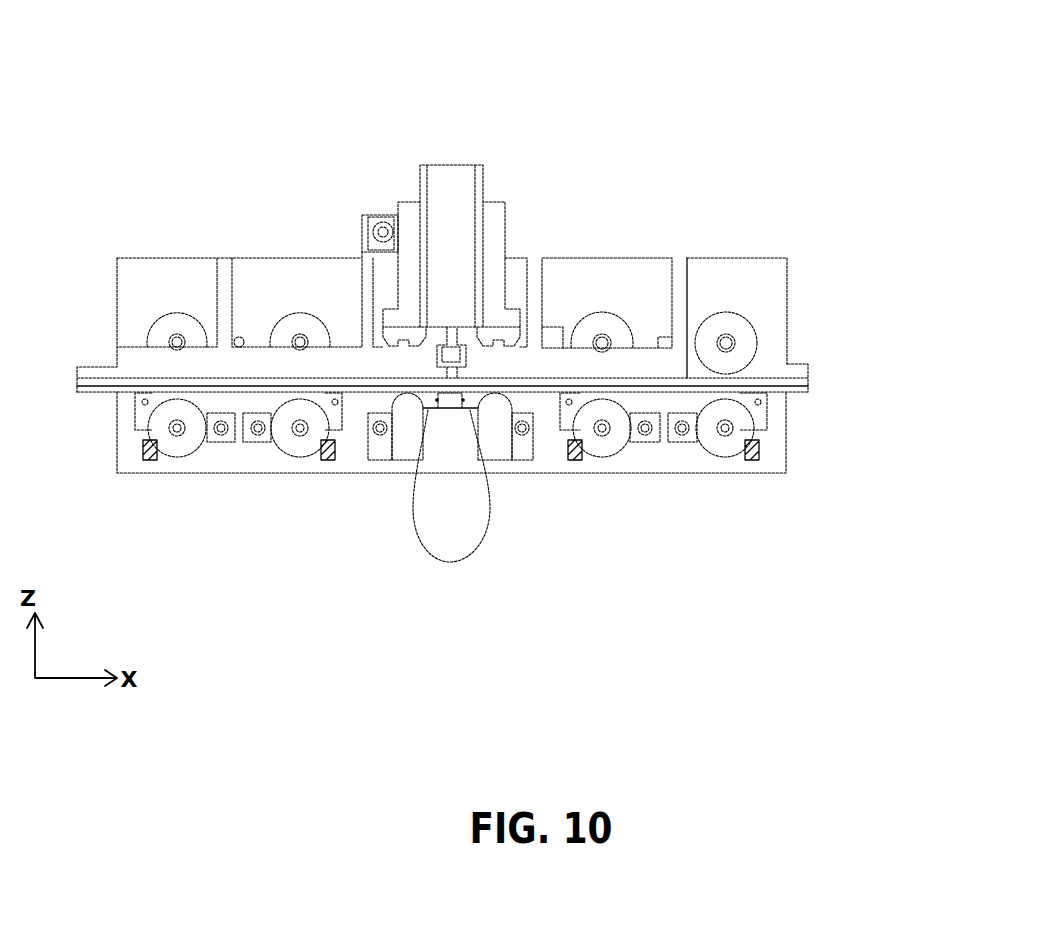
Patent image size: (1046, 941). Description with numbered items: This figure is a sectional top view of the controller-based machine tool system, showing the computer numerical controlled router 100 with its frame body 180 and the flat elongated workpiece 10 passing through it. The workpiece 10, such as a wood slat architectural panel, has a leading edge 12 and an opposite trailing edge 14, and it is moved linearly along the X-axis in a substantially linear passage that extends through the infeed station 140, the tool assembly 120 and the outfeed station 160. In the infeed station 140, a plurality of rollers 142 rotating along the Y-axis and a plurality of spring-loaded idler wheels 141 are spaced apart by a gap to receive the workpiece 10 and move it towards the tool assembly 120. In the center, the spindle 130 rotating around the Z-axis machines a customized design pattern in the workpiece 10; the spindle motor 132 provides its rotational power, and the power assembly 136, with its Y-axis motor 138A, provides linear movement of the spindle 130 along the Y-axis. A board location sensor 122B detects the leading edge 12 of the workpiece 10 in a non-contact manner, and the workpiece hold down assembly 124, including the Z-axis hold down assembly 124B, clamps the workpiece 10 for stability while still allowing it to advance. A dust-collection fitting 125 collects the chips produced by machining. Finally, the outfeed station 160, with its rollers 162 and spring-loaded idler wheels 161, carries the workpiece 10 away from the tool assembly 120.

The computer numerical controlled (CNC) router 100 is at (643, 152).
The flat elongated workpiece 10 is at (756, 385).
The leading edge 12 is at (78, 386).
The trailing edge 14 is at (808, 384).
The tool assembly 120 is at (507, 177).
The spindle motor 132 is at (458, 185).
The power assembly 136 is at (365, 235).
The Y-axis motor 138A is at (383, 222).
The board location sensor 122B is at (550, 333).
The workpiece hold down assembly 124 is at (633, 360).
The Z-axis hold down assembly 124B is at (413, 404).
The dust-collection fitting 125 is at (465, 472).
The spindle 130 is at (455, 395).
The infeed station 140 is at (745, 428).
The spring-loaded idler wheels 141 is at (608, 410).
The rollers 142 is at (612, 315).
The outfeed station 160 is at (193, 442).
The spring-loaded idler wheels 161 is at (208, 443).
The rollers 162 is at (178, 315).
The frame body 180 is at (158, 360).